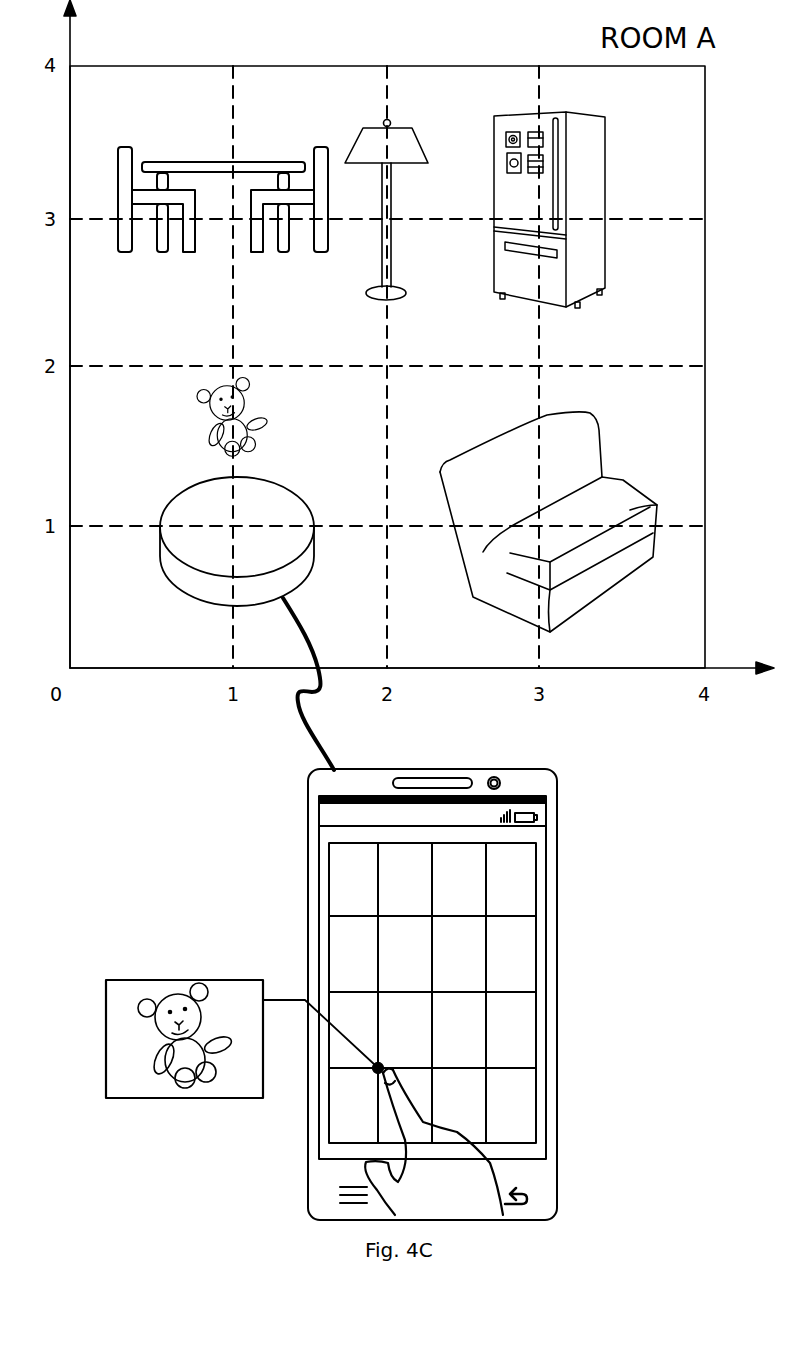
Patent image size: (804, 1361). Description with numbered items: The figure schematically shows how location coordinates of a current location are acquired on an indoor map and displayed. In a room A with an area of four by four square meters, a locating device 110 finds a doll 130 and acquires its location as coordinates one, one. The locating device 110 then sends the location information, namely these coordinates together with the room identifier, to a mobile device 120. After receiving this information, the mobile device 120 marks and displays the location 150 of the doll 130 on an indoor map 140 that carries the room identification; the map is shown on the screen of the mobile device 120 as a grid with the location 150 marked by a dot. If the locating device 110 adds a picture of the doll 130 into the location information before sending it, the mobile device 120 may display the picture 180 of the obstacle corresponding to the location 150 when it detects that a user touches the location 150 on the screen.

The locating device 110 is at (266, 477).
The mobile device 120 is at (538, 780).
The doll 130 is at (249, 383).
The indoor map 140 is at (515, 887).
The location 150 is at (382, 1064).
The picture 180 is at (170, 980).